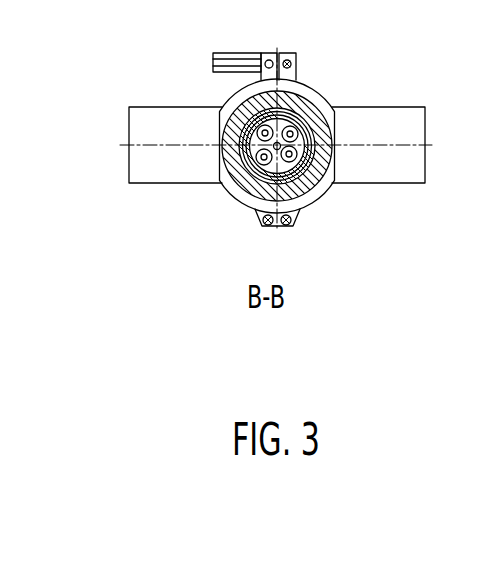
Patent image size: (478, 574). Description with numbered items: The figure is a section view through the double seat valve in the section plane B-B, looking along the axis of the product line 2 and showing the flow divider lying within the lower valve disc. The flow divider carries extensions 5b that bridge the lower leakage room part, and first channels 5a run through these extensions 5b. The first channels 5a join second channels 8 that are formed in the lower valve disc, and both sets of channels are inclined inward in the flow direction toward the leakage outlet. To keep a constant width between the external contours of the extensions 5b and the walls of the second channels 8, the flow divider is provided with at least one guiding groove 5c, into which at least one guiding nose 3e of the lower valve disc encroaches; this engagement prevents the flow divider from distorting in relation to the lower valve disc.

The product line 2 is at (408, 124).
The guiding nose 3e is at (318, 122).
The first channel 5a is at (298, 114).
The extension 5b is at (308, 178).
The guiding groove 5c is at (247, 180).
The second channel 8 is at (243, 113).